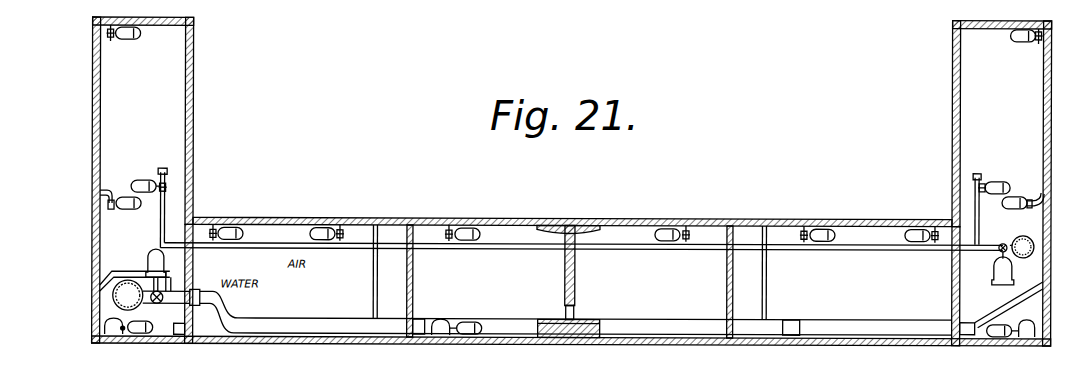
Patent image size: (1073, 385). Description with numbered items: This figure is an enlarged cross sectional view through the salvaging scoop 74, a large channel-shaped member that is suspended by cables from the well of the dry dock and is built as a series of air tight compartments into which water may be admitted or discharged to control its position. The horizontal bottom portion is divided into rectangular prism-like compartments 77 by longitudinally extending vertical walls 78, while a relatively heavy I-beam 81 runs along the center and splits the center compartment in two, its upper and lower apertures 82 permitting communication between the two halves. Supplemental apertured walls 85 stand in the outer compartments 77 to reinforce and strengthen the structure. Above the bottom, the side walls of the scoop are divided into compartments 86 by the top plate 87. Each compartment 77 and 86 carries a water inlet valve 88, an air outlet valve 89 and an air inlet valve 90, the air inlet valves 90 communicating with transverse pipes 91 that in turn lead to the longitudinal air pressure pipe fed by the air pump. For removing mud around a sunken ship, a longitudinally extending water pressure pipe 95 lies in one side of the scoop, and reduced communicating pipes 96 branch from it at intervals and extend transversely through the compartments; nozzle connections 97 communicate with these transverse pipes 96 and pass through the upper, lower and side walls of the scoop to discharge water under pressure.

The scoop 74 is at (688, 345).
The compartments 77 is at (340, 322).
The longitudinally extending vertical walls 78 is at (414, 277).
The I-beam 81 is at (576, 272).
The upper and lower apertures 82 is at (578, 308).
The supplemental apertured walls 85 is at (193, 280).
The side wall compartments 86 is at (196, 94).
The top plate 87 is at (170, 214).
The water inlet valves 88 is at (127, 196).
The air outlet valves 89 is at (128, 40).
The air inlet valves 90 is at (148, 182).
The transverse pipes 91 is at (533, 249).
The longitudinally extending pipe 95 is at (113, 294).
The reduced communicating pipes 96 is at (328, 310).
The nozzle connections 97 is at (148, 272).